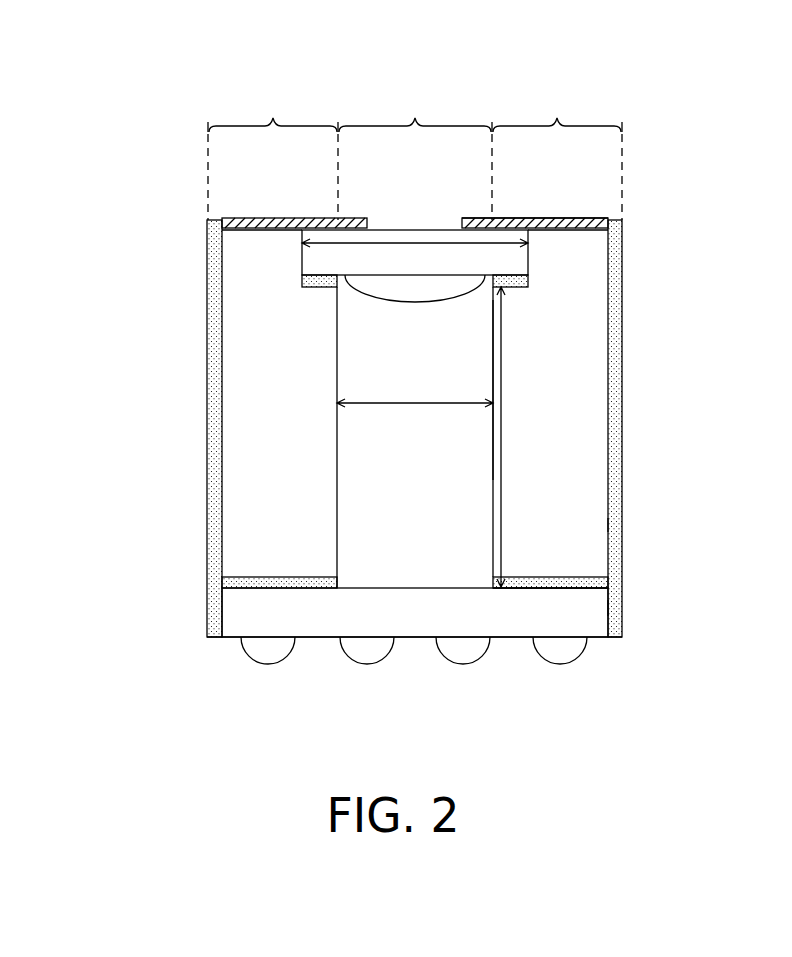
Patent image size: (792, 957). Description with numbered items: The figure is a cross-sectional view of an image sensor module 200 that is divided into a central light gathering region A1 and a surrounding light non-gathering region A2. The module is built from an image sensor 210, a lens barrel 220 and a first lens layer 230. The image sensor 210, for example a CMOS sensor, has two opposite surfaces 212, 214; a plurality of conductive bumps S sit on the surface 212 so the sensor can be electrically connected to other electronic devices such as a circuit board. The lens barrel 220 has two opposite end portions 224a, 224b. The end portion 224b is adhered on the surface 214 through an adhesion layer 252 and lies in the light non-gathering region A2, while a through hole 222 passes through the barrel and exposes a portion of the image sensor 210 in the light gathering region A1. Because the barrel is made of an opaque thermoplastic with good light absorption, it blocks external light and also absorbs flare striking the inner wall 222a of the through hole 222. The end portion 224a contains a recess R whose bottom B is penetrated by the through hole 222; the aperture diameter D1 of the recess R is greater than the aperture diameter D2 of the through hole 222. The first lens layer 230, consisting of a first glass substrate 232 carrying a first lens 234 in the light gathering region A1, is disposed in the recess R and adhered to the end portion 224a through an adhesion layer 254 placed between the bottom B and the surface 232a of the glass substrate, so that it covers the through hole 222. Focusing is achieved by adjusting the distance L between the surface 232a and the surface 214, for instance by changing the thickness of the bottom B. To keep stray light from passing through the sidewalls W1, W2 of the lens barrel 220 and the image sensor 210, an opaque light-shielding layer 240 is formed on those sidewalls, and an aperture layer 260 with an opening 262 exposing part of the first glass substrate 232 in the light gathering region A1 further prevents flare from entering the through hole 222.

The image sensor module 200 is at (145, 183).
The image sensor 210 is at (228, 605).
The surface 212 is at (563, 640).
The surface 214 is at (557, 583).
The lens barrel 220 is at (250, 410).
The through hole 222 is at (413, 325).
The inner wall 222a is at (492, 370).
The end portion 224a is at (583, 228).
The end portion 224b is at (517, 578).
The first lens layer 230 is at (134, 238).
The first glass substrate 232 is at (315, 258).
The surface 232a is at (503, 278).
The first lens 234 is at (390, 293).
The light-shielding layer 240 is at (615, 428).
The adhesion layer 252 is at (223, 582).
The adhesion layer 254 is at (517, 282).
The aperture layer 260 is at (538, 222).
The opening 262 is at (370, 225).
The light gathering region A1 is at (415, 106).
The light non-gathering region A2 is at (415, 150).
The aperture diameter of the recess D1 is at (415, 259).
The aperture diameter of the through hole D2 is at (415, 387).
The distance L is at (509, 437).
The recess R is at (511, 282).
The bottom of the recess B is at (570, 365).
The conductive bumps S is at (463, 652).
The sidewall W1 is at (609, 525).
The sidewall W2 is at (609, 608).